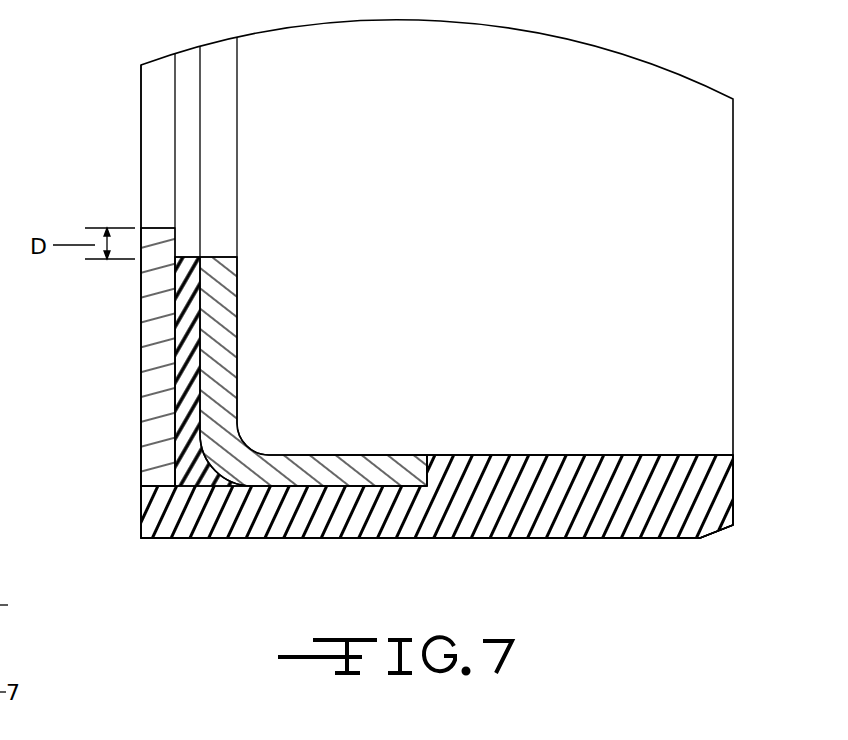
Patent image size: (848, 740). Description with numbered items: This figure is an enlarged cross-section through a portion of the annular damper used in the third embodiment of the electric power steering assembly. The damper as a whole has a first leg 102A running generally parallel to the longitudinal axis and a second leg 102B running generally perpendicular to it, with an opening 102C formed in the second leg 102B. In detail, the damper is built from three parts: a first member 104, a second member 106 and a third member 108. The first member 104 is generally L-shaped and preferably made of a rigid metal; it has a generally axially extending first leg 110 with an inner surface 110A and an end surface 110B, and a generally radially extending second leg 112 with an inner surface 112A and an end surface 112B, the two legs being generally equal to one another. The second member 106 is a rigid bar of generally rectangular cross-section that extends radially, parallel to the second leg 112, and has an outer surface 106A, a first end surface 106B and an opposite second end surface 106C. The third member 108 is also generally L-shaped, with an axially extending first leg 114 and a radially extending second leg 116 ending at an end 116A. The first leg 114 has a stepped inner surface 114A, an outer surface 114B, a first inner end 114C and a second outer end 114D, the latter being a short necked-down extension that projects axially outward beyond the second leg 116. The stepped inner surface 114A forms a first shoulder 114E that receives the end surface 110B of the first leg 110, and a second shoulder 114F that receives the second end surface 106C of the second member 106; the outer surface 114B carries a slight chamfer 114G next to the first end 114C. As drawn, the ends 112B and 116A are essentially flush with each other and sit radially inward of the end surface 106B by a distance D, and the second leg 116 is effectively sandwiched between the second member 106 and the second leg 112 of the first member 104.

The first leg 102A is at (508, 562).
The second leg 102B is at (132, 465).
The opening 102C is at (186, 215).
The first member 104 is at (265, 442).
The second member 106 is at (153, 383).
The outer surface 106A is at (172, 325).
The first end surface 106B is at (162, 228).
The second end surface 106C is at (163, 487).
The third member 108 is at (372, 550).
The first leg 110 is at (344, 456).
The inner surface 110A is at (385, 455).
The end surface 110B is at (462, 455).
The second leg 112 is at (223, 366).
The inner surface 112A is at (238, 305).
The end surface 112B is at (217, 256).
The first leg 114 is at (578, 455).
The stepped inner surface 114A is at (613, 455).
The outer surface 114B is at (603, 538).
The first inner end 114C is at (733, 490).
The second outer end 114D is at (140, 490).
The first shoulder 114E is at (418, 455).
The second shoulder 114F is at (162, 485).
The chamfer 114G is at (703, 538).
The second leg 116 is at (203, 337).
The end 116A is at (188, 256).